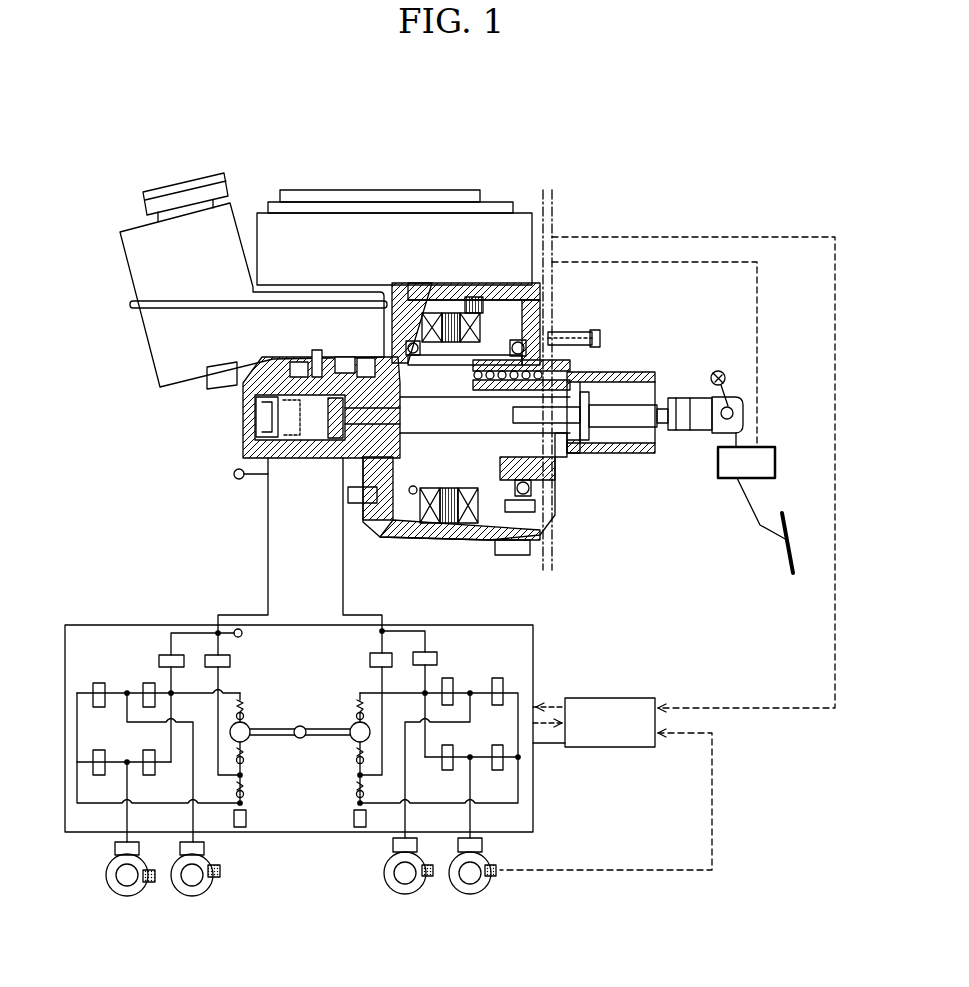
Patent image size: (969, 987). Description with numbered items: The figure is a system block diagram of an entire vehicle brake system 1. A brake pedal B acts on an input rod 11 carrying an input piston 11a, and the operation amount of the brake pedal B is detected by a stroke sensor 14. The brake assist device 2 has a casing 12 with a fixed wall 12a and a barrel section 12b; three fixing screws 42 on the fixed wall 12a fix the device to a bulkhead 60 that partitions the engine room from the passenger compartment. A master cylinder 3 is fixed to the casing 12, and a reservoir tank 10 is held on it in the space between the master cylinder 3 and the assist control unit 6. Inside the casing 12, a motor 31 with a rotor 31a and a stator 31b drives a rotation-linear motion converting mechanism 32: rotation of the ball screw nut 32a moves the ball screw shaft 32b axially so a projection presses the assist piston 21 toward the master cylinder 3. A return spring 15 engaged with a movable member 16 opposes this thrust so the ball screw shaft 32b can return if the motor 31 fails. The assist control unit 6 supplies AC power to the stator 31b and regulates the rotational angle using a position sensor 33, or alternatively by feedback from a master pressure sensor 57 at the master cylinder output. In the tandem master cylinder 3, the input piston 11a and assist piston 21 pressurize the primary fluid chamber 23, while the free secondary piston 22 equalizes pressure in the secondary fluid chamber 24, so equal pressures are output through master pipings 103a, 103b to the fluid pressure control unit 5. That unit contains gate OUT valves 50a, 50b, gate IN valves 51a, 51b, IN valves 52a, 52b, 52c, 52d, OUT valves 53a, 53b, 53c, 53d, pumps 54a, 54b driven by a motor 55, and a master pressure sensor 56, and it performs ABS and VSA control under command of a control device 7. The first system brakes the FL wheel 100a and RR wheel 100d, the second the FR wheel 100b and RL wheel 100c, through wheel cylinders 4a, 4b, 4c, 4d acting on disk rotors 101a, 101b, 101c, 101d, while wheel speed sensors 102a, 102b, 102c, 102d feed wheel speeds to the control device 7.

The vehicle brake system 1 is at (622, 147).
The brake assist device 2 is at (622, 218).
The master cylinder 3 is at (243, 405).
The wheel cylinder 4a is at (393, 845).
The wheel cylinder 4b is at (188, 845).
The wheel cylinder 4c is at (115, 849).
The wheel cylinder 4d is at (482, 845).
The fluid pressure control unit 5 is at (533, 637).
The assist control unit 6 is at (318, 190).
The control device 7 is at (605, 698).
The reservoir tank 10 is at (121, 257).
The input rod 11 is at (634, 418).
The input piston 11a is at (392, 363).
The casing 12 is at (413, 536).
The fixed wall 12a is at (540, 490).
The barrel section 12b is at (593, 460).
The stroke sensor 14 is at (772, 458).
The return spring 15 is at (556, 457).
The movable member 16 is at (573, 455).
The assist piston 21 is at (396, 433).
The secondary piston 22 is at (302, 445).
The primary fluid chamber 23 is at (342, 448).
The secondary fluid chamber 24 is at (262, 428).
The motor 31 is at (493, 575).
The rotor 31a is at (482, 537).
The stator 31b is at (448, 535).
The rotation-linear motion converting mechanism 32 is at (678, 334).
The ball screw nut 32a is at (522, 372).
The ball screw shaft 32b is at (565, 370).
The position sensor 33 is at (520, 503).
The fixing screw 42 is at (563, 336).
The gate OUT valve 50a is at (430, 653).
The gate OUT valve 50b is at (167, 655).
The gate IN valve 51a is at (370, 661).
The gate IN valve 51b is at (230, 661).
The IN valve 52a is at (448, 678).
The IN valve 52b is at (147, 683).
The IN valve 52c is at (150, 776).
The IN valve 52d is at (448, 771).
The OUT valve 53a is at (497, 678).
The OUT valve 53b is at (97, 683).
The OUT valve 53c is at (100, 776).
The OUT valve 53d is at (497, 771).
The pump 54a is at (352, 724).
The pump 54b is at (248, 724).
The motor 55 is at (300, 740).
The master pressure sensor 56 is at (249, 632).
The master pressure sensor 57 is at (234, 474).
The bulkhead 60 is at (552, 290).
The FL wheel 100a is at (403, 895).
The FR wheel 100b is at (185, 898).
The RL wheel 100c is at (120, 893).
The RR wheel 100d is at (476, 895).
The disk rotor 101a is at (385, 880).
The disk rotor 101b is at (200, 898).
The disk rotor 101c is at (107, 880).
The disk rotor 101d is at (487, 862).
The wheel speed sensor 102a is at (428, 882).
The wheel speed sensor 102b is at (222, 872).
The wheel speed sensor 102c is at (150, 884).
The wheel speed sensor 102d is at (497, 880).
The master piping 103a is at (343, 560).
The master piping 103b is at (268, 560).
The brake pedal B is at (787, 530).